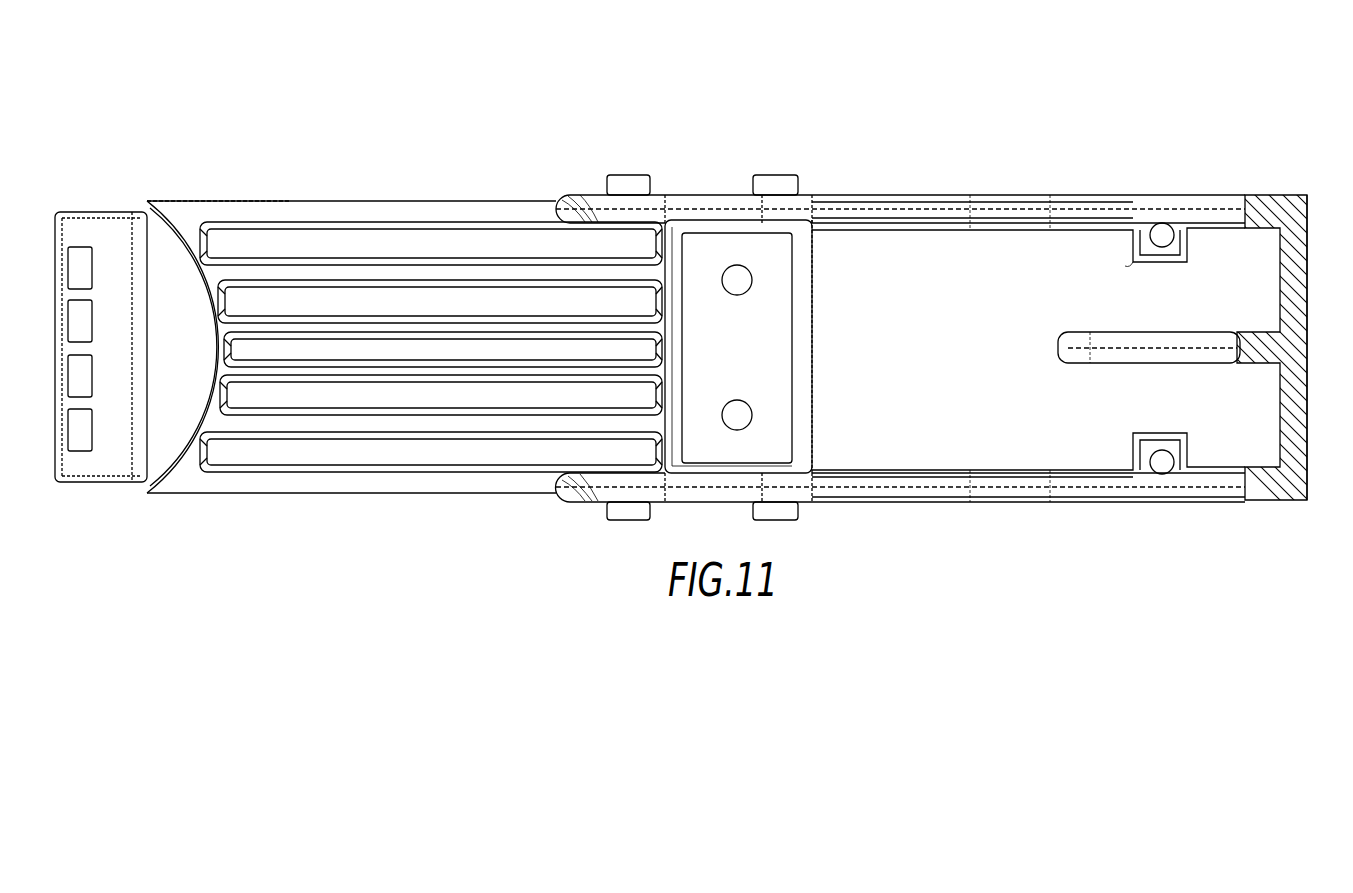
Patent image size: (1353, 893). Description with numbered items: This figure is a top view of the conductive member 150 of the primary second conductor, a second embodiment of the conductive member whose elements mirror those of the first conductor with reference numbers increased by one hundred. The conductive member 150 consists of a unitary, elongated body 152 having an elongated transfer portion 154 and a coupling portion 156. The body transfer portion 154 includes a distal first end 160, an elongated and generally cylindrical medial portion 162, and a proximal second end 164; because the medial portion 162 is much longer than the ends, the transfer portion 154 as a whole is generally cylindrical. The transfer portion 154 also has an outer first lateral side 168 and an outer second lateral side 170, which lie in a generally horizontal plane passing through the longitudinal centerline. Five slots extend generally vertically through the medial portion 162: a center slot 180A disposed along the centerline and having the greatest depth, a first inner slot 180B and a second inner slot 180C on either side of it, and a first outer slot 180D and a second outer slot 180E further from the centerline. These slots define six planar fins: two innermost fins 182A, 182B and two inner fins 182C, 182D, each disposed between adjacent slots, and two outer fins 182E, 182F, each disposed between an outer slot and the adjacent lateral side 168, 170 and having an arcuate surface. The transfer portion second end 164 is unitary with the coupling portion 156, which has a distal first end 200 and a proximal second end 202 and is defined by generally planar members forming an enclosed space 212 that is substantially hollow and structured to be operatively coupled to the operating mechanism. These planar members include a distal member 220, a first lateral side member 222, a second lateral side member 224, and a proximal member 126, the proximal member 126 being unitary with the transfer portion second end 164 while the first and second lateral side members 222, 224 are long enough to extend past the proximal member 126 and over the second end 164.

The proximal member 126 is at (825, 276).
The conductive member 150 is at (766, 95).
The conductive member body 152 is at (712, 205).
The body transfer portion 154 is at (368, 112).
The body coupling portion 156 is at (1118, 105).
The transfer portion first end 160 is at (55, 212).
The transfer portion medial portion 162 is at (297, 201).
The transfer portion second end 164 is at (672, 193).
The transfer portion first lateral side 168 is at (255, 200).
The transfer portion second lateral side 170 is at (275, 494).
The center slot 180A is at (248, 352).
The first inner slot 180B is at (246, 404).
The second inner slot 180C is at (242, 298).
The first outer slot 180D is at (228, 452).
The second outer slot 180E is at (232, 243).
The innermost fin 182A is at (473, 326).
The innermost fin 182B is at (302, 372).
The inner fin 182C is at (425, 273).
The inner fin 182D is at (380, 418).
The outer fin 182E is at (392, 210).
The outer fin 182F is at (452, 484).
The body coupling portion first end 200 is at (1296, 195).
The body coupling portion second end 202 is at (672, 490).
The body coupling portion enclosed space 212 is at (910, 247).
The distal member 220 is at (1307, 418).
The first lateral side member 222 is at (1078, 494).
The second lateral side member 224 is at (1018, 205).